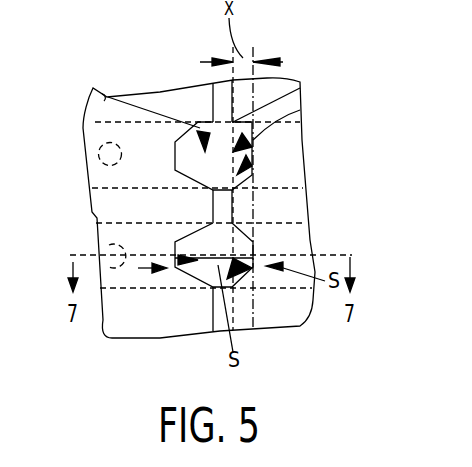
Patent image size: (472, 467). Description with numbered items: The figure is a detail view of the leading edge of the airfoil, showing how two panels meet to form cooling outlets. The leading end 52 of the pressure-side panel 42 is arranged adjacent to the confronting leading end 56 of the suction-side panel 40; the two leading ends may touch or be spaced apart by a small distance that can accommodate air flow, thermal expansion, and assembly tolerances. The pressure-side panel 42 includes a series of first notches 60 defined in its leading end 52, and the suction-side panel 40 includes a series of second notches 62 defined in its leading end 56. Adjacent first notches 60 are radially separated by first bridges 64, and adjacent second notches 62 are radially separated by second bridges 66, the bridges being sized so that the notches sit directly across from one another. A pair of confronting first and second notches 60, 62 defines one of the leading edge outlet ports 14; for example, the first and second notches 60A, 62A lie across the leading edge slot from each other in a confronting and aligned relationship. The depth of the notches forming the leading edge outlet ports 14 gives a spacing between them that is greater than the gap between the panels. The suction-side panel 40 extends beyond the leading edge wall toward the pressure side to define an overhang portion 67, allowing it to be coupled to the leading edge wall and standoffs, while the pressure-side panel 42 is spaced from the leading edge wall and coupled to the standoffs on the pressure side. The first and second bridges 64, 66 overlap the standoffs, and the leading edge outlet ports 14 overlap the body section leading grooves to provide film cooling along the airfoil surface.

The suction-side panel 40 is at (278, 88).
The pressure-side panel 42 is at (168, 98).
The leading end of the pressure-side panel 52 is at (213, 107).
The first notches 60 is at (146, 98).
The overhang portion 67 is at (282, 82).
The leading end of the suction-side panel 56 is at (300, 88).
The second notches 62 is at (253, 124).
The leading edge outlet ports 14 is at (250, 163).
The second bridges 66 is at (233, 207).
The first bridges 64 is at (213, 190).
The first notch 60A is at (197, 268).
The second notch 62A is at (250, 278).